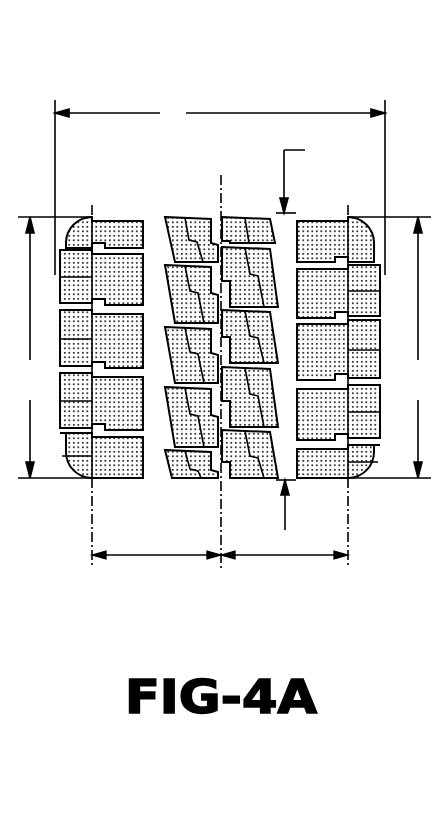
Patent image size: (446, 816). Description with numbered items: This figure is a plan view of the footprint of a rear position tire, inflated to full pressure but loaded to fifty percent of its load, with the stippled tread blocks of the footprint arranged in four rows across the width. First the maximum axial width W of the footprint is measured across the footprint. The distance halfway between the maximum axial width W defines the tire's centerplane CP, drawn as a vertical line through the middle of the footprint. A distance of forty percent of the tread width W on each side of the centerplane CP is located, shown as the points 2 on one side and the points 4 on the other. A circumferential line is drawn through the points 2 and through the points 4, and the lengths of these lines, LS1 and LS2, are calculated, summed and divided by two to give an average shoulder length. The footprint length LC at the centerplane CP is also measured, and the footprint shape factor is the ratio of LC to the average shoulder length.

The shoulder reference points 2 is at (348, 217).
The shoulder reference points 4 is at (92, 217).
The maximum axial width of the footprint W is at (220, 187).
The centerplane CP is at (217, 358).
The footprint length at the centerplane LC is at (307, 334).
The first shoulder line length LS1 is at (418, 347).
The second shoulder line length LS2 is at (28, 347).